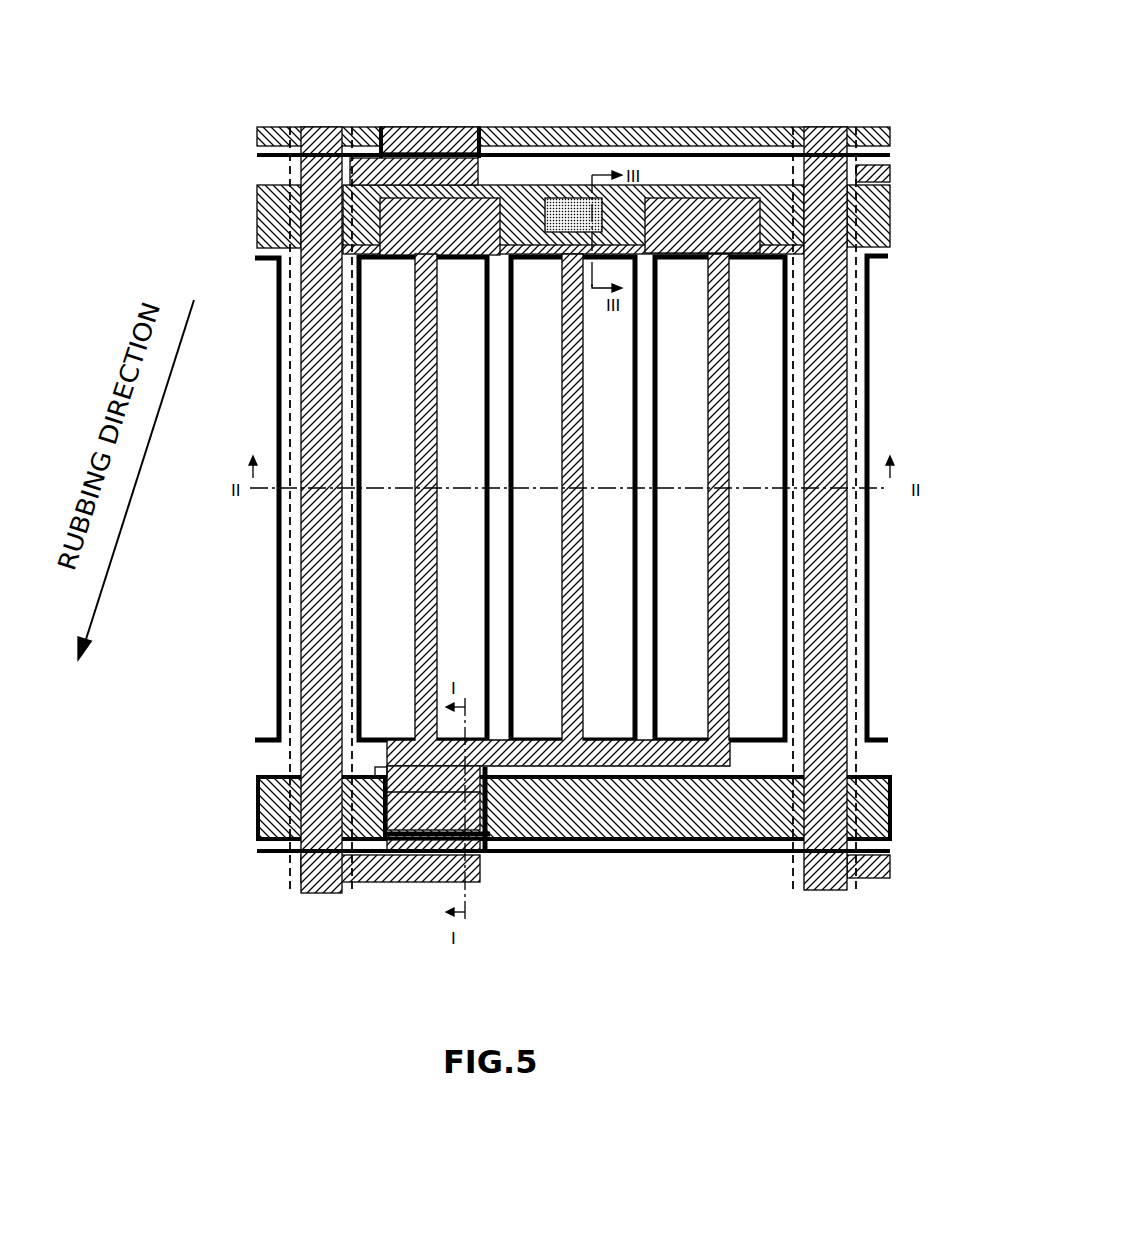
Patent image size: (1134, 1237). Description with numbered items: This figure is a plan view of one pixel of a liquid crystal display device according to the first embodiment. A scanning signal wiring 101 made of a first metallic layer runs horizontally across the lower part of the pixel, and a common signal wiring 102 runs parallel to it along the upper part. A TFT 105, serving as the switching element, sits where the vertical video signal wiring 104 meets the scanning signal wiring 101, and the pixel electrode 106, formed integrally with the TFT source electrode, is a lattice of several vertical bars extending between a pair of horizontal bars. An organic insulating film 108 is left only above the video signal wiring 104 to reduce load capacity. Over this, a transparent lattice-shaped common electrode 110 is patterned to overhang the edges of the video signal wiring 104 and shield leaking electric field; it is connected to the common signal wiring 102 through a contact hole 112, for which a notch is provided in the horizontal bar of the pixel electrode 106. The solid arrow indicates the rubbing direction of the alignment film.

The scanning signal wiring 101 is at (257, 807).
The common signal wiring 102 is at (275, 215).
The video signal wiring 104 is at (313, 868).
The TFT 105 is at (388, 867).
The pixel electrode 106 is at (730, 613).
The insulating film 108 is at (281, 544).
The common electrode 110 is at (657, 415).
The contact hole 112 is at (567, 210).